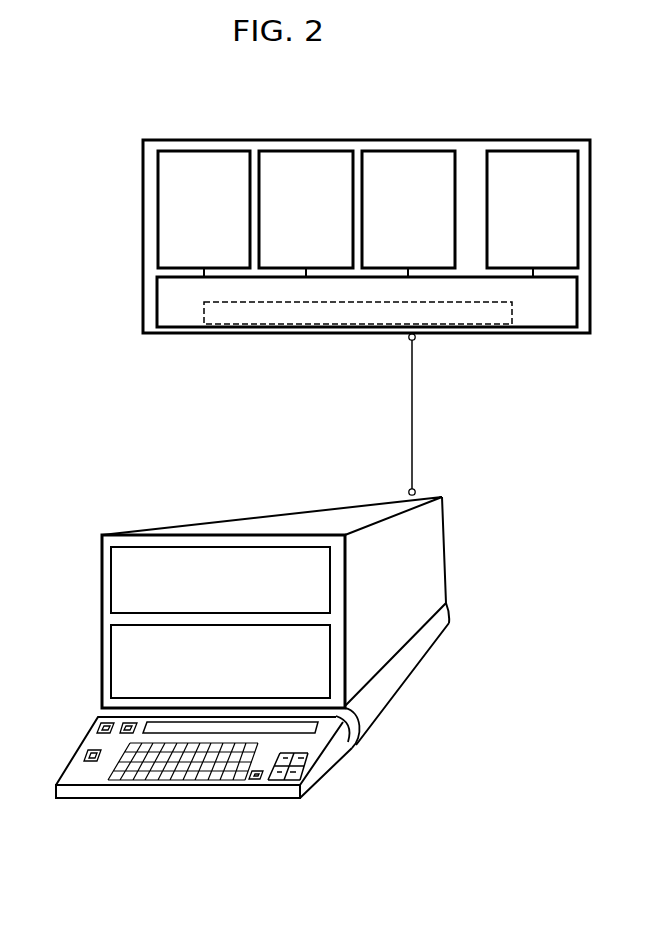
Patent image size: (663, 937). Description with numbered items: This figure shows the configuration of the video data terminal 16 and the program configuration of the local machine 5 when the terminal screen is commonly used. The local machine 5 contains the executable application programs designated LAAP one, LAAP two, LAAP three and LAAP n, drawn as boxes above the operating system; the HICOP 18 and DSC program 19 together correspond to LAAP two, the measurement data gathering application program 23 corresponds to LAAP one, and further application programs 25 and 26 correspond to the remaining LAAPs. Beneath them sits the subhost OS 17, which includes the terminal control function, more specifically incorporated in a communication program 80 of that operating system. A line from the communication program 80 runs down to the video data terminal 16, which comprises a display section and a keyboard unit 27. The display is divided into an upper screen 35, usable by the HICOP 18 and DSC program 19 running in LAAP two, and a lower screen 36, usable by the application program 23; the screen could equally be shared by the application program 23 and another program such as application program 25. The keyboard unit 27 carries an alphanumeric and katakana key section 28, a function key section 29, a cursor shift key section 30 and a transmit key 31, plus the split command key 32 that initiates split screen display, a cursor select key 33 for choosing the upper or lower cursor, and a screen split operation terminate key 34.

The local machine 5 is at (143, 205).
The application program 23 is at (194, 150).
The HICOP 18 is at (305, 182).
The DSC program 19 is at (307, 148).
The application program 25 is at (412, 150).
The application program 26 is at (538, 150).
The subhost OS 17 is at (196, 327).
The communication program 80 is at (457, 325).
The video data terminal 16 is at (439, 544).
The upper screen 35 is at (111, 578).
The lower screen 36 is at (111, 646).
The screen split operation terminate key 34 is at (128, 723).
The split command key 32 is at (98, 725).
The cursor select key 33 is at (85, 754).
The alphanumeric and katakana key section 28 is at (170, 780).
The transmit key 31 is at (251, 780).
The cursor shift key section 30 is at (285, 781).
The function key section 29 is at (348, 735).
The keyboard unit 27 is at (344, 762).